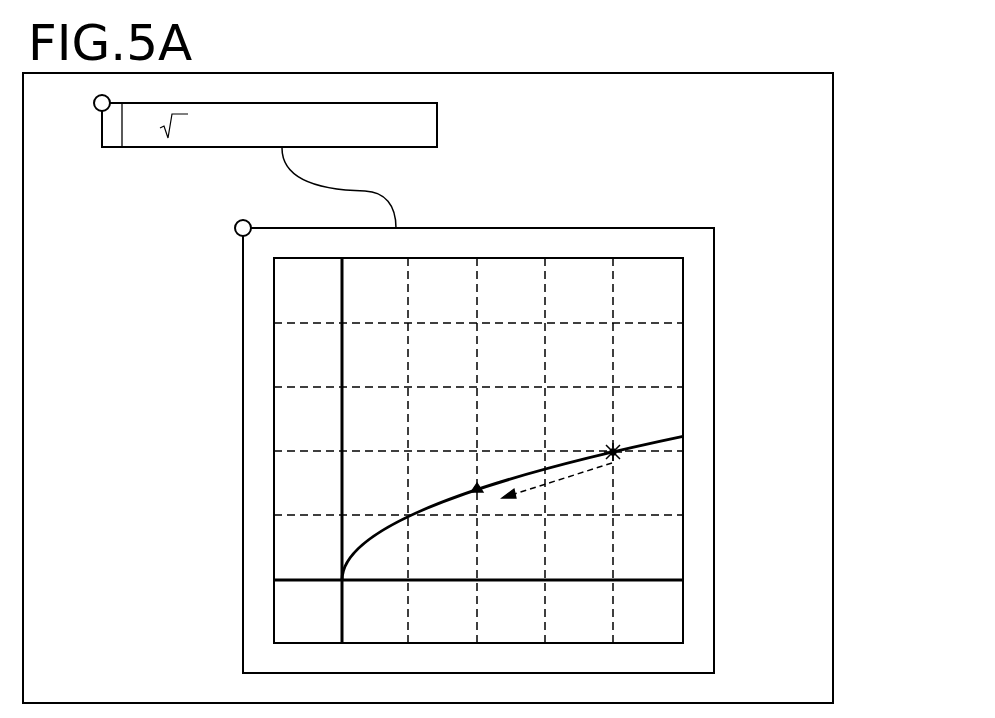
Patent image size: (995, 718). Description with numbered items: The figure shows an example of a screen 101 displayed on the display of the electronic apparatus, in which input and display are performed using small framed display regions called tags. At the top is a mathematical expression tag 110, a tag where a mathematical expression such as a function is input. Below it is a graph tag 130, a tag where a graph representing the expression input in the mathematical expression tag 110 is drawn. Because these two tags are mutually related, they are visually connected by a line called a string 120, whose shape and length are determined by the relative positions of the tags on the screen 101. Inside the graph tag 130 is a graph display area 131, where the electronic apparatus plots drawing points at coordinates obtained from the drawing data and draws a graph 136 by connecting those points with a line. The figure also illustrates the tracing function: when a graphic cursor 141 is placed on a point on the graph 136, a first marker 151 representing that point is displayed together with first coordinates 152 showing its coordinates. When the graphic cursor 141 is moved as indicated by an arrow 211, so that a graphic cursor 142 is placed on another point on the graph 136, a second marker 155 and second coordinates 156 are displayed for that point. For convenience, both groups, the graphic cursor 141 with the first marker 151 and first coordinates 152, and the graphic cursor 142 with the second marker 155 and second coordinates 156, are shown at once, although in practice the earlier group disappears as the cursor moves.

The screen 101 is at (840, 105).
The mathematical expression tag 110 is at (444, 113).
The string 120 is at (386, 196).
The graph tag 130 is at (722, 241).
The graph display area 131 is at (685, 356).
The graph 136 is at (392, 521).
The graphic cursor 141 is at (618, 458).
The graphic cursor 142 is at (486, 496).
The first marker 151 is at (609, 449).
The first coordinates 152 is at (604, 412).
The second marker 155 is at (475, 495).
The second coordinates 156 is at (452, 446).
The arrow 211 is at (567, 488).